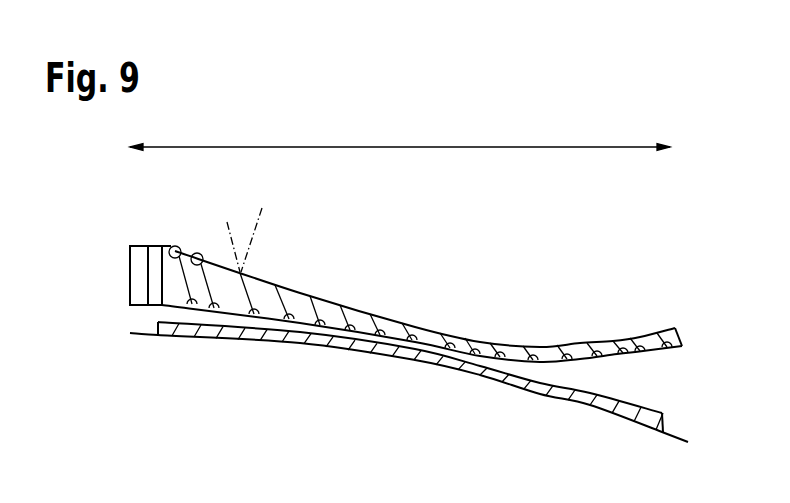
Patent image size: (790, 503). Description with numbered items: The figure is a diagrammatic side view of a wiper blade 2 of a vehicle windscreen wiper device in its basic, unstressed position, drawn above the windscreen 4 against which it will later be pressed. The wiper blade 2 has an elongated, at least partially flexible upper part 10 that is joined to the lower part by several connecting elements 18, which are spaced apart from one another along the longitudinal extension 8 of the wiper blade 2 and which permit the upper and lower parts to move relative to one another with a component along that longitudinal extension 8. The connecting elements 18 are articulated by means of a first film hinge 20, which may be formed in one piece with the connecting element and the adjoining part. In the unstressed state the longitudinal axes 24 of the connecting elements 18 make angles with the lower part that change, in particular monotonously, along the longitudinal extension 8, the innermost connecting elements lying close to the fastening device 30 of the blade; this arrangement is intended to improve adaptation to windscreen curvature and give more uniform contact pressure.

The wiper blade 2 is at (426, 301).
The windscreen 4 is at (558, 397).
The longitudinal extension 8 is at (402, 147).
The upper part 10 is at (505, 340).
The connecting elements 18 is at (328, 307).
The first film hinge 20 is at (176, 245).
The longitudinal axes 24 is at (251, 227).
The fastening device 30 is at (130, 281).